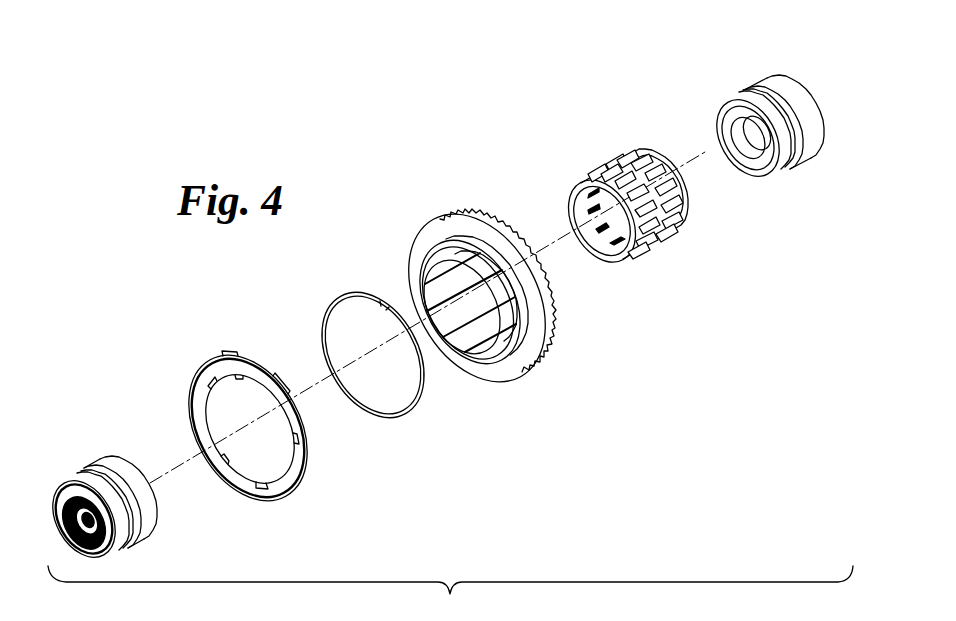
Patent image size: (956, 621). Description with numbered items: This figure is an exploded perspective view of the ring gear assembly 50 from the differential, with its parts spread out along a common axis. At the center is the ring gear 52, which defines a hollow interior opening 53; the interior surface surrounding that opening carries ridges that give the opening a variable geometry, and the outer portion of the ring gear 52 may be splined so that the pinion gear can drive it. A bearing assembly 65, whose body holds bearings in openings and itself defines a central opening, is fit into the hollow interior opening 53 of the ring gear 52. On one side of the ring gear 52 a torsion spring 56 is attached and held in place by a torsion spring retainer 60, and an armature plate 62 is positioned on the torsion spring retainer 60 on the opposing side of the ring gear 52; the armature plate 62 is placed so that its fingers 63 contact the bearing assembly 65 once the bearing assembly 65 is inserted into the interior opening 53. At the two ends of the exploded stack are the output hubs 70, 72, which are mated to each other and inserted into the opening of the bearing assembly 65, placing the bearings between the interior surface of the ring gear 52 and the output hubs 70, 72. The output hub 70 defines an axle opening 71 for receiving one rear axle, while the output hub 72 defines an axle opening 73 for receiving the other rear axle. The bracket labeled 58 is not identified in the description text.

The ring gear assembly 50 is at (450, 593).
The ring gear 52 is at (474, 307).
The hollow interior opening 53 is at (447, 296).
The torsion spring 56 is at (417, 403).
The retainer plate 58 is at (269, 438).
The torsion spring retainer 60 is at (282, 383).
The armature plate 62 is at (203, 380).
The fingers 63 is at (298, 438).
The bearing assembly 65 is at (656, 264).
The output hub 70 is at (749, 102).
The axle opening 71 is at (737, 133).
The output hub 72 is at (93, 487).
The axle opening 73 is at (67, 523).